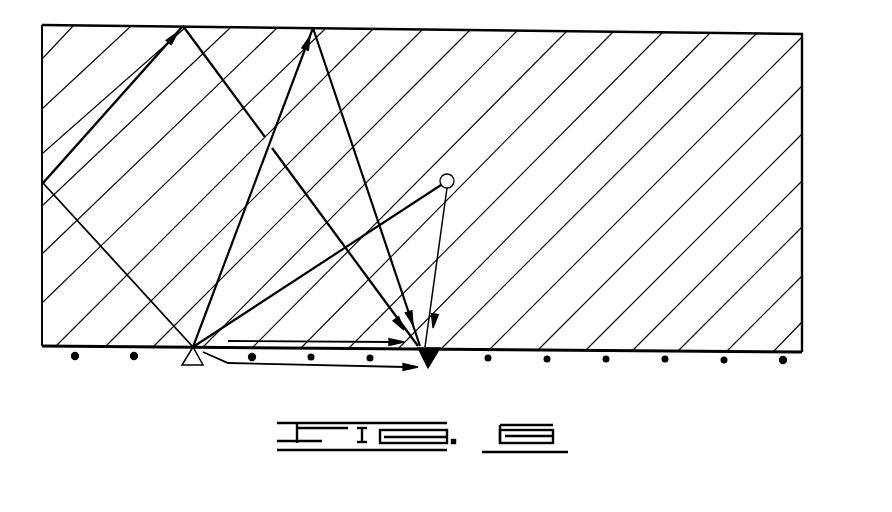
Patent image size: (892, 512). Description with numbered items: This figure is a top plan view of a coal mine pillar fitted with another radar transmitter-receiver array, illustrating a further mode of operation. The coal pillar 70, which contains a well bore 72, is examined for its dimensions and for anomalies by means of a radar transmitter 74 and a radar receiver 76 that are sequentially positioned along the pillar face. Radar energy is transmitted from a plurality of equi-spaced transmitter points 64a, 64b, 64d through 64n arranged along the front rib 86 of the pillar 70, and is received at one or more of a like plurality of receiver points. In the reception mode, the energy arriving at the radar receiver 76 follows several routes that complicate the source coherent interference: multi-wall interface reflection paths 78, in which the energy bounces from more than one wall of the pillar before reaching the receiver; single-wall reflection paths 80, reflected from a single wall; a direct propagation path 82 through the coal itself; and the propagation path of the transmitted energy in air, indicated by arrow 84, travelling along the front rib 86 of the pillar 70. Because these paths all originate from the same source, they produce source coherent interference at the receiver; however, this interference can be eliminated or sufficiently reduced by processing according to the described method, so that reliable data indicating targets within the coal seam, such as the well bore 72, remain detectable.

The coal pillar 70 is at (612, 127).
The well bore 72 is at (454, 182).
The radar transmitter 74 is at (192, 369).
The radar receiver 76 is at (431, 370).
The multi-wall interface reflection paths 78 is at (238, 106).
The single-wall reflection paths 80 is at (339, 107).
The direct propagation path 82 is at (293, 340).
The arrow showing propagation path in air 84 is at (327, 369).
The front rib 86 is at (519, 353).
The transmitter point 64a is at (73, 362).
The transmitter point 64b is at (133, 362).
The transmitter point 64d is at (254, 363).
The transmitter point 64n is at (783, 365).